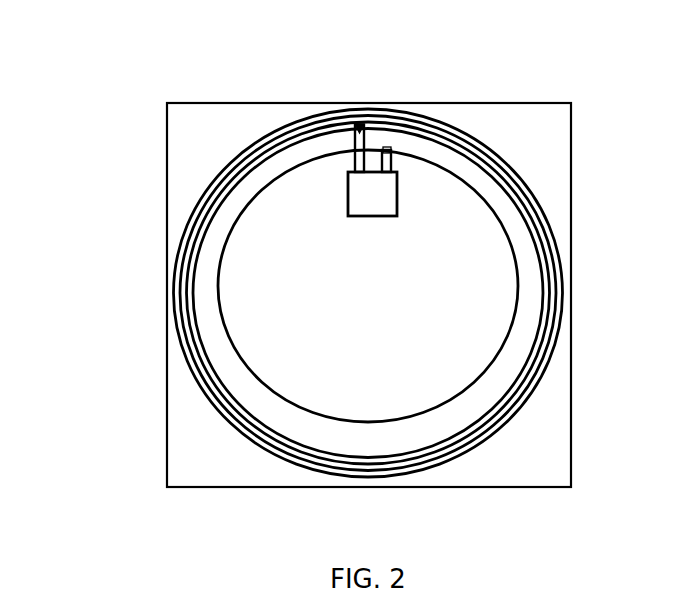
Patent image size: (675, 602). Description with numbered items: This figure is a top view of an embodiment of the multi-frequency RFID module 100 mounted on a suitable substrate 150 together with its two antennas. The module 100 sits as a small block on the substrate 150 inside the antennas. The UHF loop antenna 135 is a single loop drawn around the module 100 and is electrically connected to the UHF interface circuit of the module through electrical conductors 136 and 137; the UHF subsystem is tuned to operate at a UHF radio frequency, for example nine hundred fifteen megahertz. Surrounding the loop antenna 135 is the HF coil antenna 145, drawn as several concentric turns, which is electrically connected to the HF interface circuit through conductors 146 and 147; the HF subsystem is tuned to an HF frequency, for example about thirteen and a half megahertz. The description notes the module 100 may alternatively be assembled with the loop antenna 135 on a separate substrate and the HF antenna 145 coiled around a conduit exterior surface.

The RFID module 100 is at (381, 203).
The loop antenna 135 is at (492, 360).
The electrical conductor 136 is at (352, 143).
The electrical conductor 137 is at (357, 126).
The HF coil antenna 145 is at (176, 265).
The conductor 146 is at (387, 157).
The conductor 147 is at (391, 156).
The substrate 150 is at (368, 286).